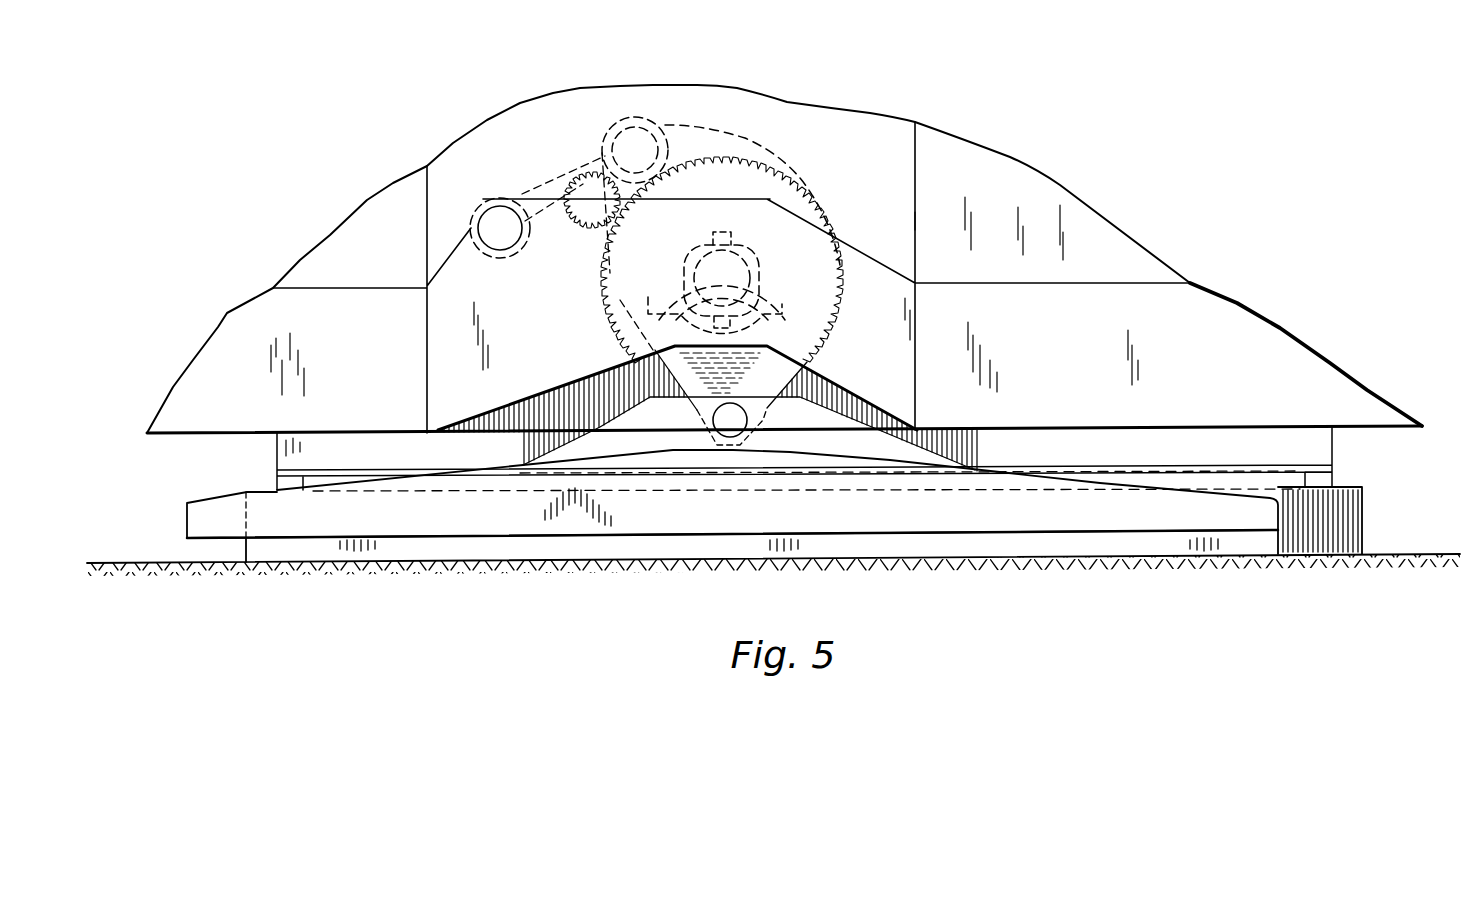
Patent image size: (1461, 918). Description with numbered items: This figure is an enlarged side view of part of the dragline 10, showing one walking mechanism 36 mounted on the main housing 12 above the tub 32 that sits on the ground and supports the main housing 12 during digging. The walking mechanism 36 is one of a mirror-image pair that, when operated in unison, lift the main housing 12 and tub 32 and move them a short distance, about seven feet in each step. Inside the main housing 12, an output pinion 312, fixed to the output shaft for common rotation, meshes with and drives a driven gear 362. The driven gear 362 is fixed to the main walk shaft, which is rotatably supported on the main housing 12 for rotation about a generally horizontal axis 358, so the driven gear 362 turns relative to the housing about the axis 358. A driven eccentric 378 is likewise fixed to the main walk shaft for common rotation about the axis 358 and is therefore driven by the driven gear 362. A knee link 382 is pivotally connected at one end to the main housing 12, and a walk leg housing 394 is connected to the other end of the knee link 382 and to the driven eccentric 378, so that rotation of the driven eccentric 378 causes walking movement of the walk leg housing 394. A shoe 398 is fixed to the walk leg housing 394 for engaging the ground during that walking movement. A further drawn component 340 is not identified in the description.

The dragline 10 is at (1158, 182).
The main housing 12 is at (953, 142).
The tub 32 is at (1363, 498).
The walking mechanism 36 is at (802, 162).
The output pinion 312 is at (585, 213).
The hub 340 is at (741, 247).
The axis 358 is at (718, 268).
The driven gear 362 is at (612, 313).
The driven eccentric 378 is at (640, 268).
The knee link 382 is at (575, 165).
The walk leg housing 394 is at (680, 127).
The shoe 398 is at (452, 522).